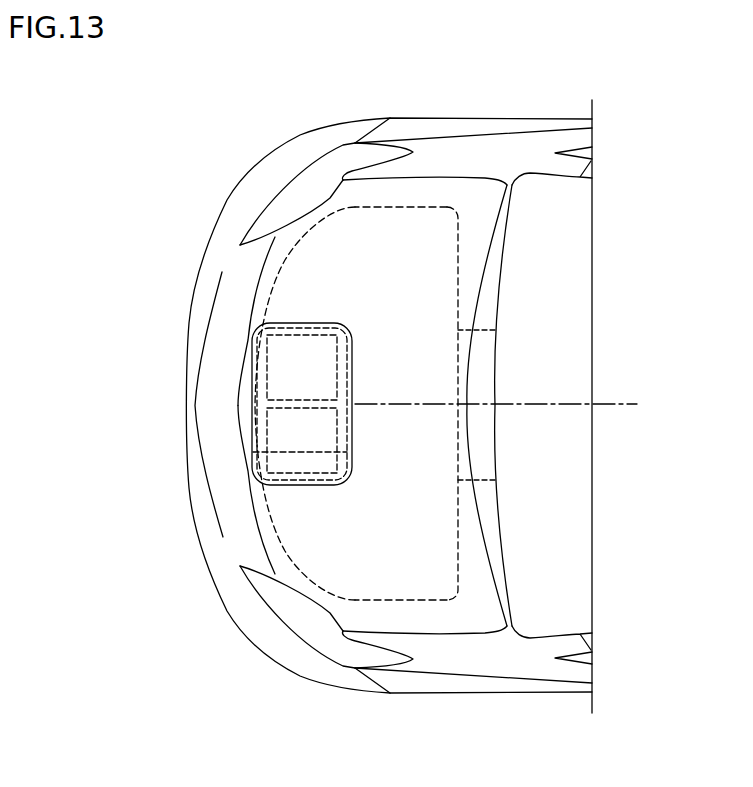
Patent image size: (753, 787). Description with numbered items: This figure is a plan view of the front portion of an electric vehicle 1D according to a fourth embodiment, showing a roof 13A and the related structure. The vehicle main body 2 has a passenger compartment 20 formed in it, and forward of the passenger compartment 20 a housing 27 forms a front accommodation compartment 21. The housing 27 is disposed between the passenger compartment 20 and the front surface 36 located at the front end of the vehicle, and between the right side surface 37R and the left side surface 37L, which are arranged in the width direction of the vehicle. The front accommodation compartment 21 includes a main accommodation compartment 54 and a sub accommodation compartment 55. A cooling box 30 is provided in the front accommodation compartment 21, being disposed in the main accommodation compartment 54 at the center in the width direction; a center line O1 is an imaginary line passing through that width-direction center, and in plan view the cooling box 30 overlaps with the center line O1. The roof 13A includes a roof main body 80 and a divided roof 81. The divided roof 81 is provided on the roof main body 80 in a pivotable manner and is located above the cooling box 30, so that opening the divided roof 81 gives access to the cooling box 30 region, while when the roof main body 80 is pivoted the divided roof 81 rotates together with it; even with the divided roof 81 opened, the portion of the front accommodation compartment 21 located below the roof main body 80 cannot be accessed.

The electric vehicle 1D is at (166, 133).
The vehicle main body 2 is at (582, 283).
The passenger compartment 20 is at (582, 318).
The front surface 36 is at (195, 312).
The right side surface 37R is at (460, 118).
The left side surface 37L is at (458, 692).
The front accommodation compartment 21 is at (283, 538).
The housing 27 is at (278, 403).
The main accommodation compartment 54 is at (428, 507).
The sub accommodation compartment 55 is at (500, 470).
The roof 13A is at (118, 363).
The divided roof 81 is at (252, 380).
The roof main body 80 is at (373, 415).
The cooling box 30 is at (253, 452).
The center line O1 is at (622, 404).